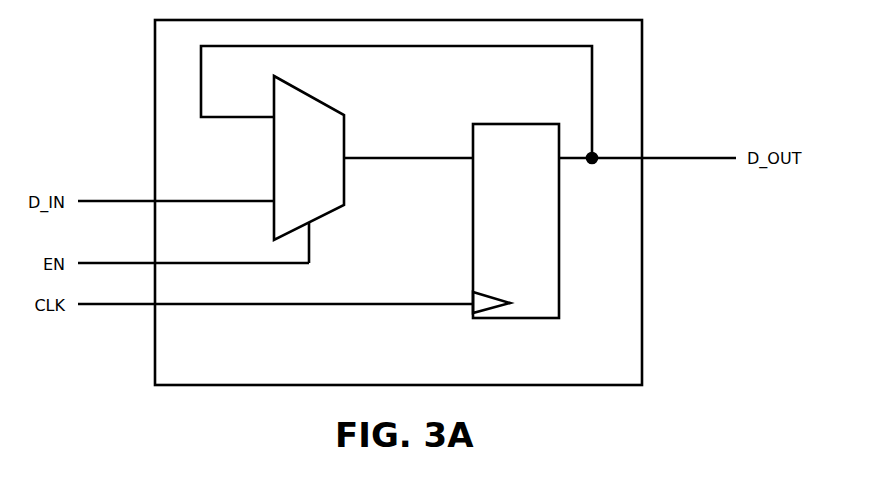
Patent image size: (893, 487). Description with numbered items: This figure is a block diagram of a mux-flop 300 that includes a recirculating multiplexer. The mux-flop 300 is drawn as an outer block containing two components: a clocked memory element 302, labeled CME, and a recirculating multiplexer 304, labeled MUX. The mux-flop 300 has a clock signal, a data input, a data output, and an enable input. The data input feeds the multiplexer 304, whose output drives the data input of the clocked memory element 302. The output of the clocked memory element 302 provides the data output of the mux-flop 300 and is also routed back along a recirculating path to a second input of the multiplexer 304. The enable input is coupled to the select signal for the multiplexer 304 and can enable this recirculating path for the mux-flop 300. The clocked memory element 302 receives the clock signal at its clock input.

The mux-flop 300 is at (398, 202).
The clocked memory element 302 is at (516, 221).
The recirculating multiplexer 304 is at (309, 158).